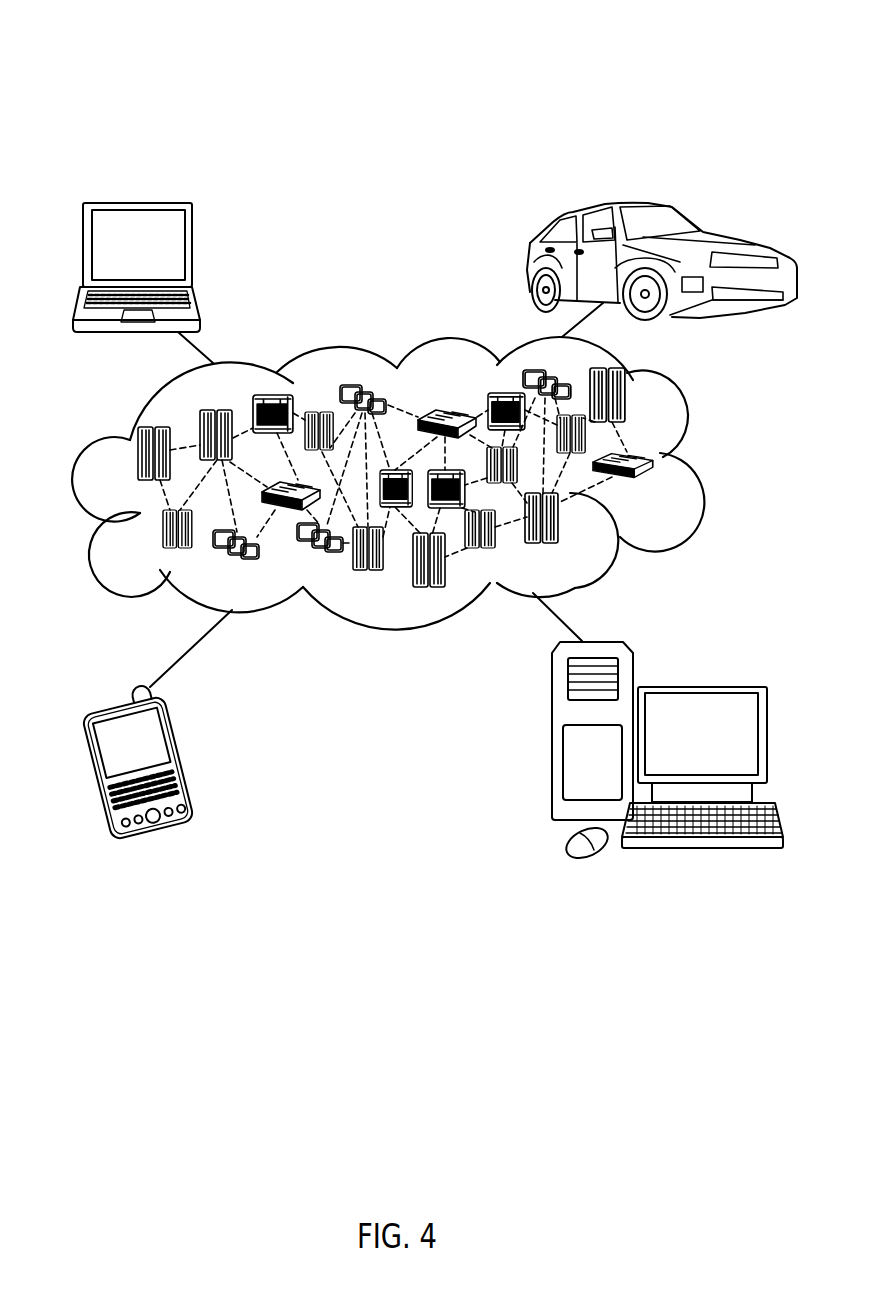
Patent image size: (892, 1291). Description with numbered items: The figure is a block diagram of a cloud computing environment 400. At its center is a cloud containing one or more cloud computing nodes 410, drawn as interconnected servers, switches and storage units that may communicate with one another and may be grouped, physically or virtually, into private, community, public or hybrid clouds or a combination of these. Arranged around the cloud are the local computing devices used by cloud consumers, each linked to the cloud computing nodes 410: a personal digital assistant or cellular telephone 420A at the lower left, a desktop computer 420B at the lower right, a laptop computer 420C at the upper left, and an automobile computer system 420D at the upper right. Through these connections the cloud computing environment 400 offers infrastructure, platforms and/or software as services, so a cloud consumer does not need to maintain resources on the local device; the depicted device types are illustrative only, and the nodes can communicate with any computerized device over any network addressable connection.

The cloud computing environment 400 is at (322, 56).
The cloud computing nodes 410 is at (660, 490).
The personal digital assistant (PDA) or cellular telephone 420A is at (183, 757).
The desktop computer 420B is at (700, 685).
The laptop computer 420C is at (192, 251).
The automobile computer system 420D is at (530, 262).